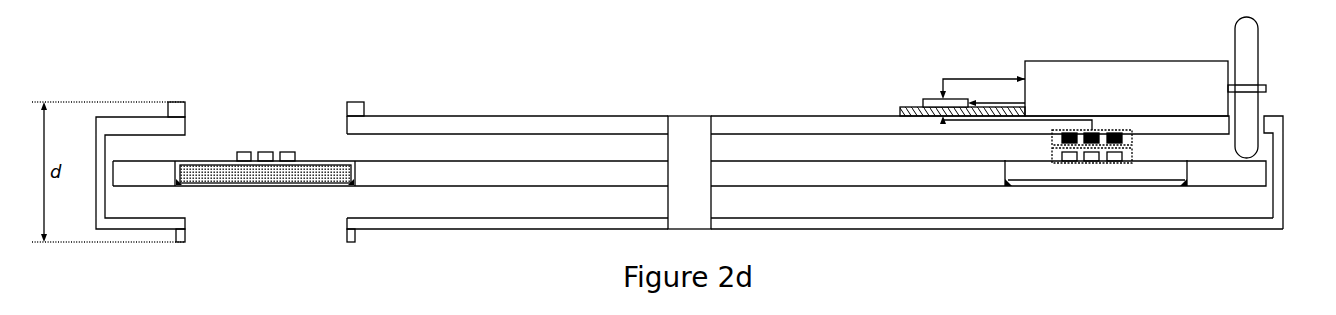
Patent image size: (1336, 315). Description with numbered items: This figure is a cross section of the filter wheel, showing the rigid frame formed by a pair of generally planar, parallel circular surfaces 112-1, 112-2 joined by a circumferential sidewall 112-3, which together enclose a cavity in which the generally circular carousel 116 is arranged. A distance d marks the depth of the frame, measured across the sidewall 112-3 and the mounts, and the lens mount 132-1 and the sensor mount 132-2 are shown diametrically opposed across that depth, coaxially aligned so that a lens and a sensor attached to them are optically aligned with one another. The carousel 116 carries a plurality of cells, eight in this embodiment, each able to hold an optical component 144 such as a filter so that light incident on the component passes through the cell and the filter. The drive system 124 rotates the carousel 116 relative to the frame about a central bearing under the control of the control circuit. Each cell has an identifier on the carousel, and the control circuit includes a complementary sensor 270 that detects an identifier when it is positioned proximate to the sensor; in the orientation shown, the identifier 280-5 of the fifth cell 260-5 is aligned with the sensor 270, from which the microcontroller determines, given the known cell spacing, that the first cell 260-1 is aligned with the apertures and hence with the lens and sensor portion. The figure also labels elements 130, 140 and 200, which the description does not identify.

The planar circular surface 112-1 is at (548, 116).
The planar circular surface 112-2 is at (513, 230).
The circumferential sidewall 112-3 is at (1283, 207).
The carousel 116 is at (837, 187).
The drive system 124 is at (1012, 44).
The spacer block 130 is at (688, 133).
The lens mount 132-1 is at (180, 102).
The sensor mount 132-2 is at (352, 242).
The housing 140 is at (220, 313).
The optical component 144 is at (297, 164).
The sensor assembly 200 is at (882, 61).
The first cell 260-1 is at (228, 146).
The fifth cell 260-5 is at (1171, 147).
The sensor 270 is at (1052, 135).
The identifier 280-5 is at (1088, 165).